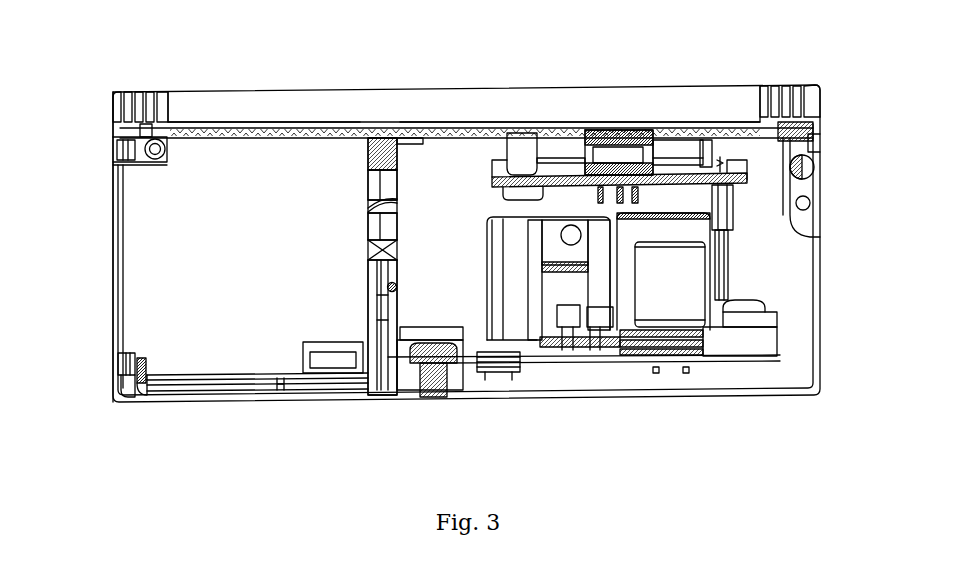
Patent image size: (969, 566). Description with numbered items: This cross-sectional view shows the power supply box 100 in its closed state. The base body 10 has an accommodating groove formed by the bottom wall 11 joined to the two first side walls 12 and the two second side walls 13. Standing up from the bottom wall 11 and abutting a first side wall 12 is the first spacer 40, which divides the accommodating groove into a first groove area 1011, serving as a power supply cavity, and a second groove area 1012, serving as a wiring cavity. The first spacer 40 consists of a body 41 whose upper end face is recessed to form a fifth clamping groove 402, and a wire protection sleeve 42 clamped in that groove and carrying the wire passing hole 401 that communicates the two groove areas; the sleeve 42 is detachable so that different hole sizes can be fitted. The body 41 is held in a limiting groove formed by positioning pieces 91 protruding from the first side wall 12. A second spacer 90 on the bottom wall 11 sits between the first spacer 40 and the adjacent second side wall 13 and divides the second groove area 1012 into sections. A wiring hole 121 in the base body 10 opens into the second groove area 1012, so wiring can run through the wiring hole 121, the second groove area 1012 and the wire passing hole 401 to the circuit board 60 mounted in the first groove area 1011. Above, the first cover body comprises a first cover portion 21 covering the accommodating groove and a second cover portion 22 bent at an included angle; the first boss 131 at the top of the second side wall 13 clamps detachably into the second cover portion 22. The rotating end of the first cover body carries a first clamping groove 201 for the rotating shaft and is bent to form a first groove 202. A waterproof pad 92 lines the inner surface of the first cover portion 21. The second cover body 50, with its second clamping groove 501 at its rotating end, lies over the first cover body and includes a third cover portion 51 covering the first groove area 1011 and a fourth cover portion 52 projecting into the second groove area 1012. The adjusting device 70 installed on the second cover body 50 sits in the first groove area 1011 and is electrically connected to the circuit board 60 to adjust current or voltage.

The power supply box 100 is at (453, 23).
The base body 10 is at (205, 431).
The bottom wall 11 is at (144, 390).
The first side wall 12 is at (186, 360).
The second side wall 13 is at (117, 357).
The wiring hole 121 is at (280, 390).
The first boss 131 is at (147, 128).
The first cover portion 21 is at (558, 100).
The second cover portion 22 is at (112, 153).
The first clamping groove 201 is at (807, 168).
The first groove 202 is at (815, 143).
The second clamping groove 501 is at (802, 125).
The second cover body 50 is at (385, 67).
The third cover portion 51 is at (413, 139).
The fourth cover portion 52 is at (369, 141).
The first groove area 1011 is at (460, 147).
The second groove area 1012 is at (287, 147).
The first spacer 40 is at (88, 212).
The body 41 is at (380, 305).
The wire protection sleeve 42 is at (368, 209).
The wire passing hole 401 is at (362, 183).
The fifth clamping groove 402 is at (374, 272).
The circuit board 60 is at (531, 364).
The adjusting device 70 is at (748, 186).
The second spacer 90 is at (341, 337).
The positioning piece 91 is at (395, 290).
The waterproof pad 92 is at (665, 127).